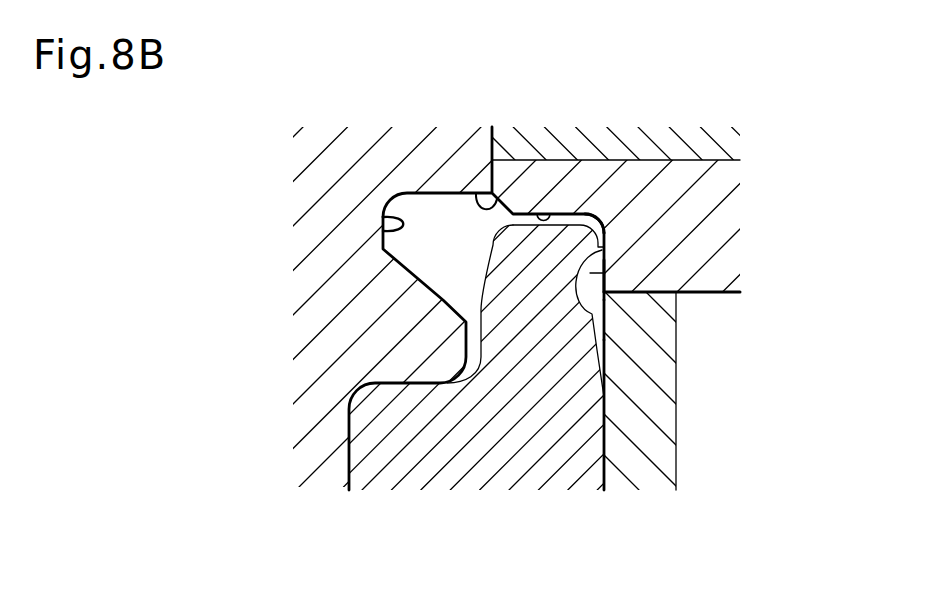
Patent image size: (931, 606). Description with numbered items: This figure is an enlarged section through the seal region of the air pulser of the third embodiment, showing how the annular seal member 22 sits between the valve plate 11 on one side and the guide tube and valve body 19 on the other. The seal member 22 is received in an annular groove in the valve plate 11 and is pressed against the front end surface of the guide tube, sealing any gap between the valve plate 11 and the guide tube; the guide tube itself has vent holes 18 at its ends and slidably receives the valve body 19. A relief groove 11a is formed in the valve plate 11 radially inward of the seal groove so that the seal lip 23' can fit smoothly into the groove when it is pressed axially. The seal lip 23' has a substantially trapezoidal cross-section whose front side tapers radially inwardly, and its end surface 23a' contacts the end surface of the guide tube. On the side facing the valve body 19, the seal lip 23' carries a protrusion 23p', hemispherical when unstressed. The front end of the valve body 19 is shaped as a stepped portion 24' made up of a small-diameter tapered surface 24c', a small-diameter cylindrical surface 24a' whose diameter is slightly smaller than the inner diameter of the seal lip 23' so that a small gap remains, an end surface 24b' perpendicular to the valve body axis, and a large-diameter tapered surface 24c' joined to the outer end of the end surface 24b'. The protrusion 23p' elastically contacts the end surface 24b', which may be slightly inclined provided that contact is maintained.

The valve plate 11 is at (313, 151).
The relief groove 11a is at (384, 226).
The vent holes 18 is at (713, 402).
The valve body 19 is at (713, 227).
The annular seal member 22 is at (505, 458).
The seal lip 23' is at (519, 246).
The end surface of the seal lip 23a' is at (725, 283).
The protrusion 23p' is at (688, 315).
The stepped portion 24' is at (553, 147).
The small-diameter cylindrical surface 24a' is at (543, 138).
The end surface 24b' is at (613, 149).
The tapered surface 24c' is at (577, 174).